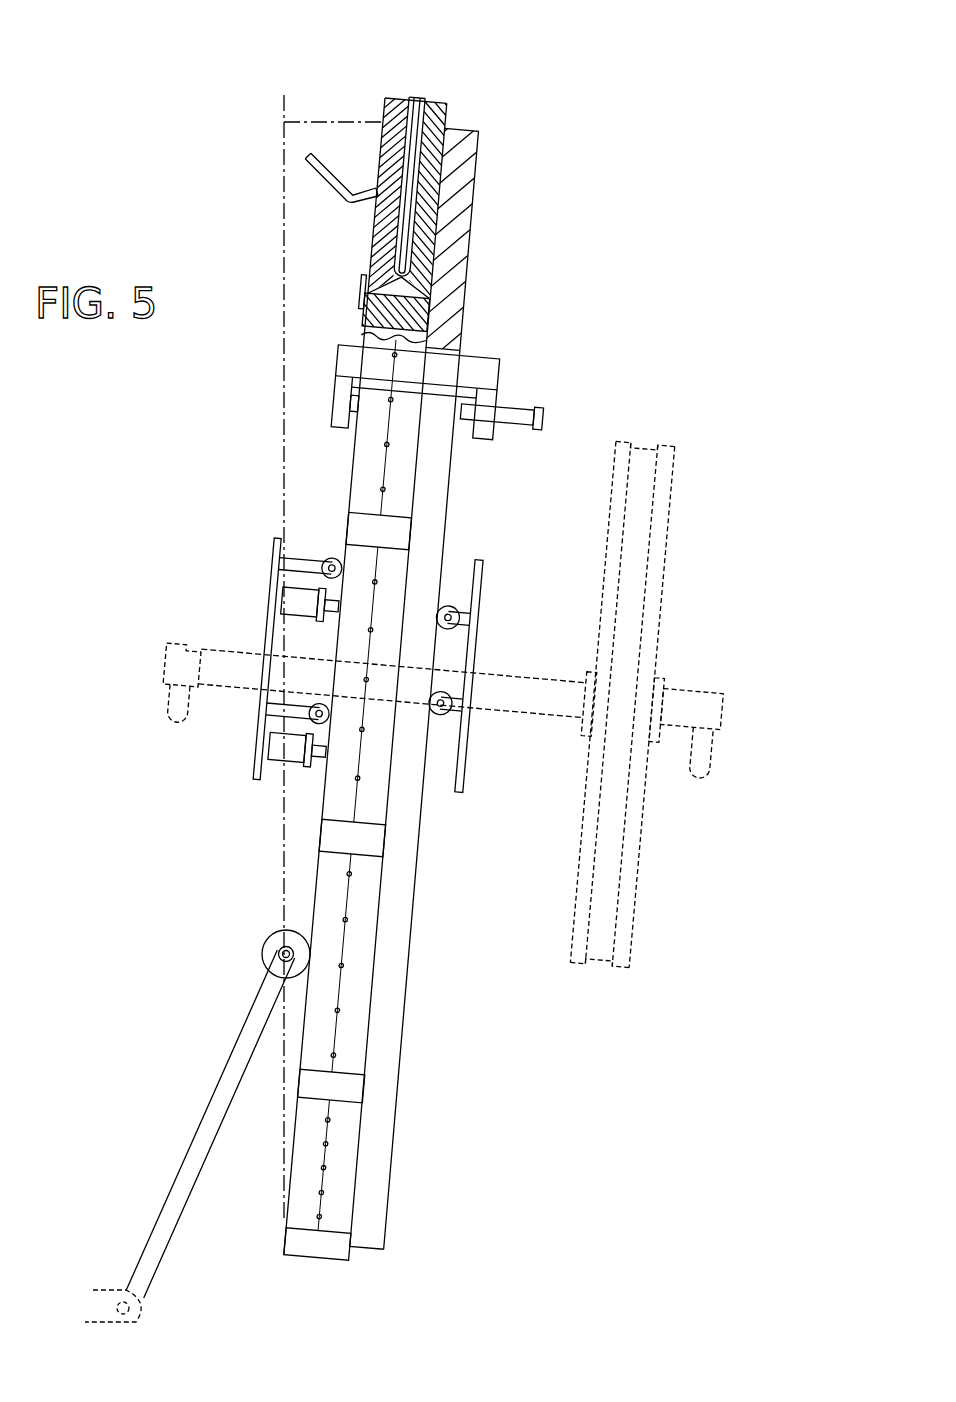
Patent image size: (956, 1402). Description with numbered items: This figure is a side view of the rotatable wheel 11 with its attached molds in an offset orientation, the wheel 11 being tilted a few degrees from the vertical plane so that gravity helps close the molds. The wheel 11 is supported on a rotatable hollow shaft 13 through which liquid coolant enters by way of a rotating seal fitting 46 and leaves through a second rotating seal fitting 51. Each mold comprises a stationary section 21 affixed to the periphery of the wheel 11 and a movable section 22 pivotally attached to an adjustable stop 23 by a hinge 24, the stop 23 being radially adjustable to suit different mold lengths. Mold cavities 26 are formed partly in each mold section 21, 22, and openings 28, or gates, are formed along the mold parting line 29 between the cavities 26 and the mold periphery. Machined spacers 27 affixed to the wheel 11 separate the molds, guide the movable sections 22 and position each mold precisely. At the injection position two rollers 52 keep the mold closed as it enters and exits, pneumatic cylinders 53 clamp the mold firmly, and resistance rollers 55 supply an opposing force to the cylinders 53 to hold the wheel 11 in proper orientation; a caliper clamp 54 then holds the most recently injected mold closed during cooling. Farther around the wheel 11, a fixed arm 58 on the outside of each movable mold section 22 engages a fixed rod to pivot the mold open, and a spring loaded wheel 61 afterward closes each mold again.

The rotatable wheel 11 is at (477, 151).
The rotatable hollow shaft 13 is at (237, 655).
The stationary mold section 21 is at (448, 116).
The movable mold section 22 is at (386, 107).
The adjustable stop 23 is at (370, 318).
The hinge 24 is at (363, 292).
The mold cavities 26 is at (412, 115).
The machined spacers 27 is at (397, 532).
The openings (gates) 28 is at (418, 103).
The mold parting line 29 is at (345, 958).
The rotating seal fitting 46 is at (720, 708).
The second rotating seal fitting 51 is at (178, 668).
The rollers 52 is at (336, 557).
The pneumatic cylinders 53 is at (300, 603).
The caliper clamp 54 is at (505, 396).
The resistance rollers 55 is at (447, 700).
The fixed arm 58 is at (306, 165).
The spring loaded wheel 61 is at (267, 942).